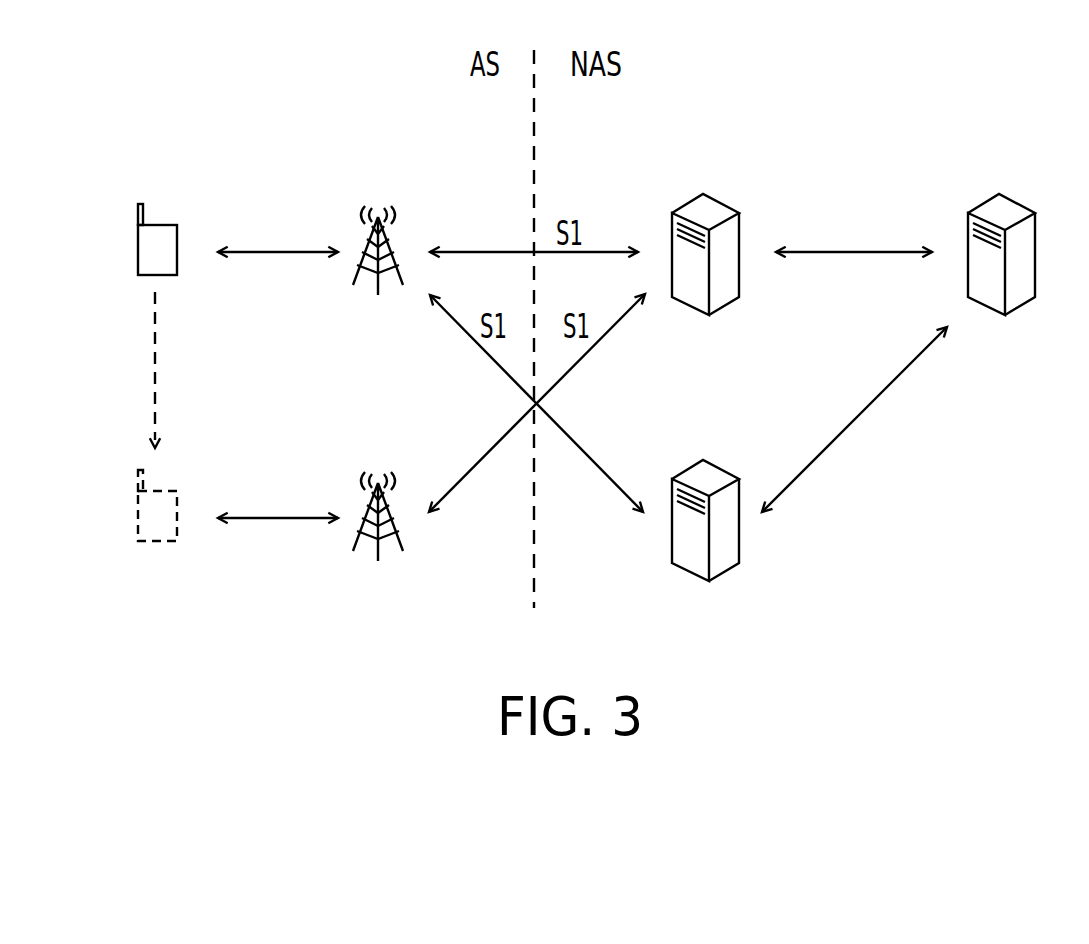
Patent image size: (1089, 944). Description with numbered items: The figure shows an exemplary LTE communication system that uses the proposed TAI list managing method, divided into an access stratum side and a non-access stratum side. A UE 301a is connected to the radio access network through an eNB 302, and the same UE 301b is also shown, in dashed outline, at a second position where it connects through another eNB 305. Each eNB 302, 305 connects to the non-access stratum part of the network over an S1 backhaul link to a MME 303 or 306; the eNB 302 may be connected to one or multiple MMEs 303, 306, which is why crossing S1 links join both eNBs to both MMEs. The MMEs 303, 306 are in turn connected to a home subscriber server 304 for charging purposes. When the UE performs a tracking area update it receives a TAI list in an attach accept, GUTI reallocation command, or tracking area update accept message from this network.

The UE 301a is at (182, 218).
The UE 301b is at (182, 483).
The eNB 302 is at (408, 218).
The MME 303 is at (730, 196).
The home subscriber server 304 is at (1026, 197).
The eNB 305 is at (408, 483).
The MME 306 is at (730, 463).